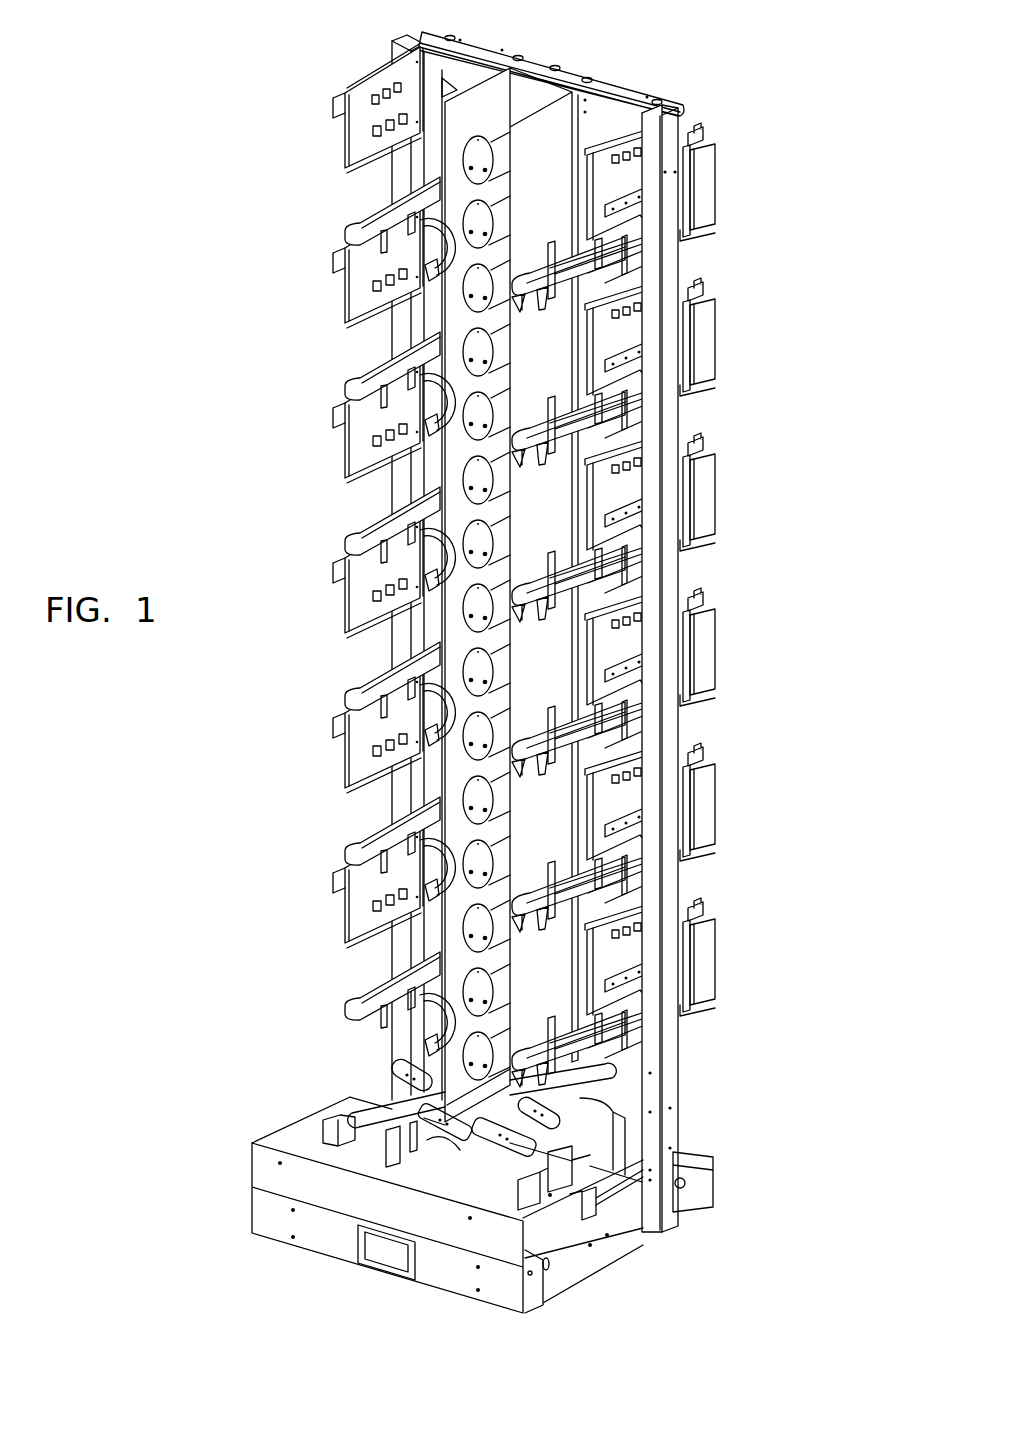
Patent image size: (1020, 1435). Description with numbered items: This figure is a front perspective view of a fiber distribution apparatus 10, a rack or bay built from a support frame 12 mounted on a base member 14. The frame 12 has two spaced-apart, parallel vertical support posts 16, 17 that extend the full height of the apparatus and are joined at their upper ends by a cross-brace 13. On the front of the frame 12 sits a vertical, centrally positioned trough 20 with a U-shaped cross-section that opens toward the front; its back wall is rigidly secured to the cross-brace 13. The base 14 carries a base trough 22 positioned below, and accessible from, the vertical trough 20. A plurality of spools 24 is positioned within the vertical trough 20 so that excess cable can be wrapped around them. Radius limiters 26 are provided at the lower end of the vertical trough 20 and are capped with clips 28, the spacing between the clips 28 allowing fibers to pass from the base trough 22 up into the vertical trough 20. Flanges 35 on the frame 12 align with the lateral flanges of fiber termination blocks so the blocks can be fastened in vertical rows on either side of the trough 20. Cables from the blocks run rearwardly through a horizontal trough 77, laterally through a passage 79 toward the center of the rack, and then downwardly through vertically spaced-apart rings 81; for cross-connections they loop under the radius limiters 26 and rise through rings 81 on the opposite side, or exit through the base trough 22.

The fiber distribution apparatus 10 is at (775, 331).
The support frame 12 is at (668, 1096).
The cross-brace 13 is at (600, 95).
The base member 14 is at (600, 1242).
The vertical support post 16 is at (387, 1048).
The vertical support post 17 is at (668, 1075).
The vertical trough 20 is at (540, 122).
The base trough 22 is at (533, 1234).
The spools 24 is at (473, 926).
The radius limiters 26 is at (532, 1130).
The clips 28 is at (505, 1148).
The flange 35 is at (593, 653).
The horizontal trough 77 is at (538, 758).
The passage 79 is at (570, 712).
The rings 81 is at (418, 444).